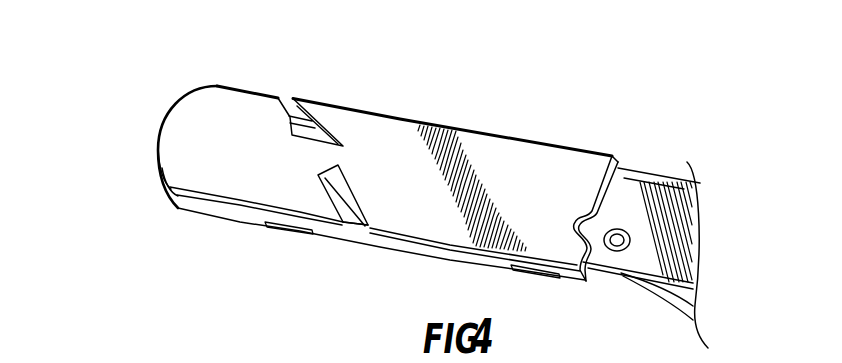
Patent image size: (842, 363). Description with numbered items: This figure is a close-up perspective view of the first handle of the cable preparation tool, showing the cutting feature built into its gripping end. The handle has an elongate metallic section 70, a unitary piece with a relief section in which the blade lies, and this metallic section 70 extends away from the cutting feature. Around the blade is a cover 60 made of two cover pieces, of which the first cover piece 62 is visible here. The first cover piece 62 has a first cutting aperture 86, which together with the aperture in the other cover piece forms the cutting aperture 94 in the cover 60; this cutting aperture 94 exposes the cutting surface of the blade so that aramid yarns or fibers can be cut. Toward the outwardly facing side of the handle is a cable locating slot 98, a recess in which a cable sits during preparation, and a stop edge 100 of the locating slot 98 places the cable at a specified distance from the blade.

The cover 60 is at (388, 159).
The first cover piece 62 is at (472, 157).
The elongate metallic section 70 is at (656, 234).
The first cutting aperture 86 is at (324, 104).
The cutting aperture 94 is at (271, 88).
The cable locating slot 98 is at (328, 252).
The stop edge 100 is at (368, 193).